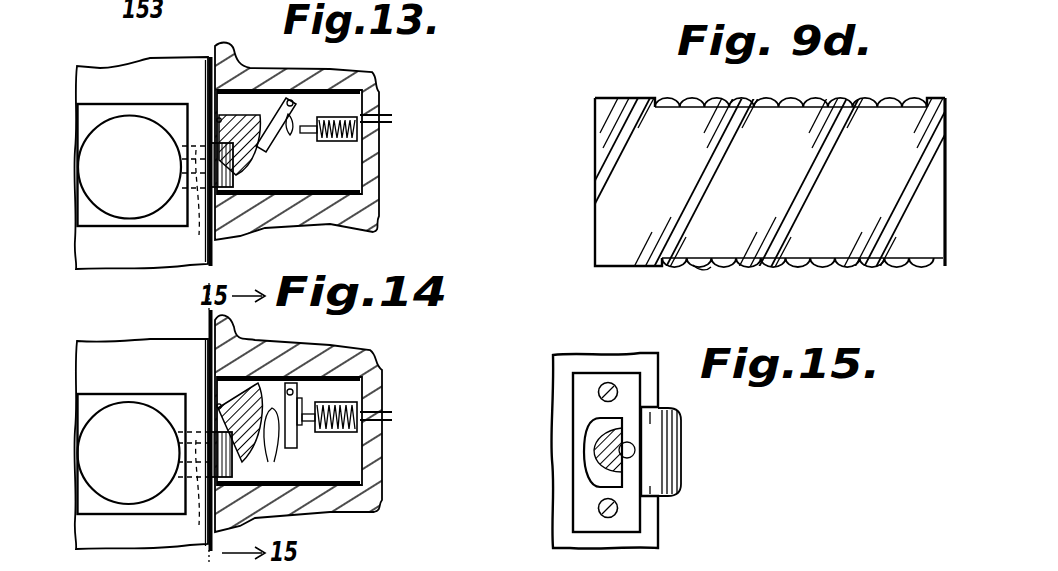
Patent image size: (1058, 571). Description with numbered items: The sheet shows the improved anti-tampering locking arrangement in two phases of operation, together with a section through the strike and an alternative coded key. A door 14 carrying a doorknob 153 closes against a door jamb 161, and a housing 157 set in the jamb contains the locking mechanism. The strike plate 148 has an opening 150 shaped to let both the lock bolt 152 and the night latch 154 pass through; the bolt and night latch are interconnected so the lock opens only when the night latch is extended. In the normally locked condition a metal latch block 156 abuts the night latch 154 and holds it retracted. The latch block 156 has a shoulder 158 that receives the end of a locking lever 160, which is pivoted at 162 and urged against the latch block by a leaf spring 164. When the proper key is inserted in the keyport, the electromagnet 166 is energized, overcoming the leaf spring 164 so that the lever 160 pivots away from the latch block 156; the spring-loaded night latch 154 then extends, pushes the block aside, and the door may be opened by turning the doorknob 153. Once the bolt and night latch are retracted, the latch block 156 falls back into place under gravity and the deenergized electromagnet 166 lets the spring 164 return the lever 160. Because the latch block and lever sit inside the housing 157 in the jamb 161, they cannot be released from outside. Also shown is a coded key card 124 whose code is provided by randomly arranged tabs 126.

In FIG. 13, the door 14 is at (127, 77).
In FIG. 14, the door 14 is at (137, 354).
In FIG. 9D, the card 124 is at (613, 106).
In FIG. 9D, the tabs 126 is at (699, 268).
In FIG. 13, the strike plate 148 is at (214, 256).
In FIG. 14, the strike plate 148 is at (208, 430).
In FIG. 15, the strike plate 148 is at (640, 478).
In FIG. 15, the opening 150 is at (597, 428).
In FIG. 13, the lock bolt 152 is at (197, 188).
In FIG. 14, the lock bolt 152 is at (206, 483).
In FIG. 15, the lock bolt 152 is at (596, 464).
In FIG. 13, the doorknob 153 is at (137, 140).
In FIG. 14, the doorknob 153 is at (138, 434).
In FIG. 13, the night latch 154 is at (203, 190).
In FIG. 14, the night latch 154 is at (204, 433).
In FIG. 15, the night latch 154 is at (634, 447).
In FIG. 13, the latch block 156 is at (240, 156).
In FIG. 14, the latch block 156 is at (246, 468).
In FIG. 13, the housing 157 is at (293, 86).
In FIG. 14, the housing 157 is at (290, 358).
In FIG. 13, the shoulder 158 is at (268, 146).
In FIG. 14, the shoulder 158 is at (268, 462).
In FIG. 13, the locking lever 160 is at (262, 97).
In FIG. 14, the locking lever 160 is at (372, 463).
In FIG. 13, the door jamb 161 is at (333, 208).
In FIG. 14, the door jamb 161 is at (333, 498).
In FIG. 15, the door jamb 161 is at (615, 361).
In FIG. 13, the pivot 162 is at (378, 86).
In FIG. 14, the pivot 162 is at (337, 351).
In FIG. 13, the leaf spring 164 is at (289, 137).
In FIG. 14, the leaf spring 164 is at (367, 380).
In FIG. 13, the electromagnet 166 is at (362, 143).
In FIG. 14, the electromagnet 166 is at (300, 436).